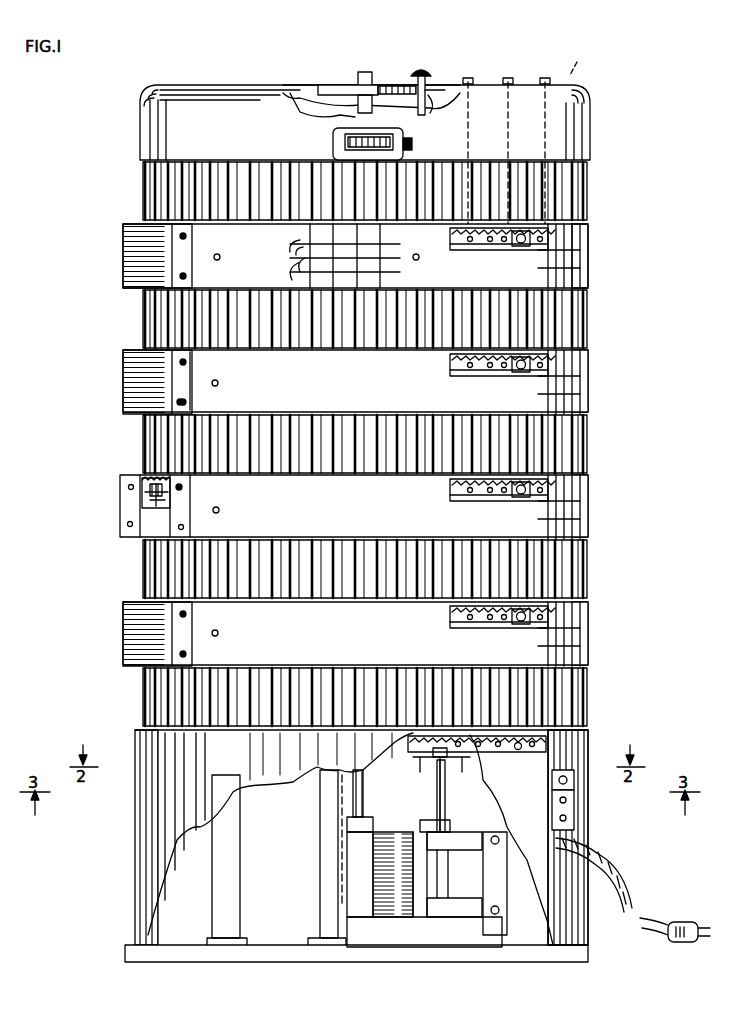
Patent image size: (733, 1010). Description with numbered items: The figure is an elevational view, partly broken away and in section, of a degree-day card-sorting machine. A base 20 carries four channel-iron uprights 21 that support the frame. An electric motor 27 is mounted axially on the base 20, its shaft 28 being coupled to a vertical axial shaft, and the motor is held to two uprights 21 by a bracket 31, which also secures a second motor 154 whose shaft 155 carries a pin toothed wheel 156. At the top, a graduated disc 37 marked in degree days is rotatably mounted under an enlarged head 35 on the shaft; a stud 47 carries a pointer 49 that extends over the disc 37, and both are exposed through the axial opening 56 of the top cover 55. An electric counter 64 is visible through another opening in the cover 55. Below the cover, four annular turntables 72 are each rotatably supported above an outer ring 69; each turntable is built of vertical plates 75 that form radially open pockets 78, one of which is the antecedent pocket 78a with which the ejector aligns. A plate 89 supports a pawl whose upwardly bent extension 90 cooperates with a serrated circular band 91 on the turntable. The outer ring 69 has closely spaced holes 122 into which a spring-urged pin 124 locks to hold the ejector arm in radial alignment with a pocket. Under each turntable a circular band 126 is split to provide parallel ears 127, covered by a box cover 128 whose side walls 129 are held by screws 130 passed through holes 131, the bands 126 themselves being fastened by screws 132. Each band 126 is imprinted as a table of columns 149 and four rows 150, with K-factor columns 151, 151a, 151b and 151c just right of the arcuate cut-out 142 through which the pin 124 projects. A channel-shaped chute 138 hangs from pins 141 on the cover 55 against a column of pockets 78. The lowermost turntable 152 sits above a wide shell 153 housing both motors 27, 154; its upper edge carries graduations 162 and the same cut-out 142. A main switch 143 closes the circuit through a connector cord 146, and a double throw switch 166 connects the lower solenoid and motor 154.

The base 20 is at (282, 962).
The uprights 21 is at (322, 795).
The electric motor 27 is at (400, 832).
The motor shaft 28 is at (364, 806).
The bracket 31 is at (462, 836).
The enlarged head 35 is at (366, 72).
The graduated disc 37 is at (392, 86).
The stud 47 is at (430, 108).
The pointer 49 is at (424, 76).
The top cover 55 is at (583, 114).
The axial opening 56 is at (305, 84).
The electric counter 64 is at (336, 144).
The outer ring 69 is at (450, 619).
The annular turntable 72 is at (129, 182).
The vertical plates 75 is at (186, 172).
The pockets 78 is at (258, 172).
The antecedent pocket 78a is at (298, 678).
The plate 89 is at (172, 510).
The upwardly bent extension 90 is at (156, 506).
The circular band 91 is at (148, 477).
The holes 122 is at (474, 494).
The pin 124 is at (516, 494).
The circular band 126 is at (600, 261).
The ears 127 is at (122, 508).
The box cover 128 is at (136, 640).
The side walls 129 is at (190, 378).
The screws 130 is at (190, 400).
The holes 131 is at (126, 525).
The screws 132 is at (217, 254).
The chute 138 is at (586, 59).
The pins 141 is at (545, 80).
The cut-out 142 is at (470, 626).
The main switch 143 is at (575, 790).
The connector cord 146 is at (628, 870).
The columns 149 is at (363, 232).
The rows 150 is at (278, 260).
The column 151 is at (556, 243).
The column 151a is at (556, 367).
The column 151b is at (556, 492).
The column 151c is at (556, 617).
The lowermost turntable 152 is at (129, 697).
The shell 153 is at (148, 812).
The motor 154 is at (460, 888).
The shaft 155 is at (437, 793).
The pin toothed wheel 156 is at (416, 758).
The graduations 162 is at (262, 745).
The double throw switch 166 is at (598, 811).